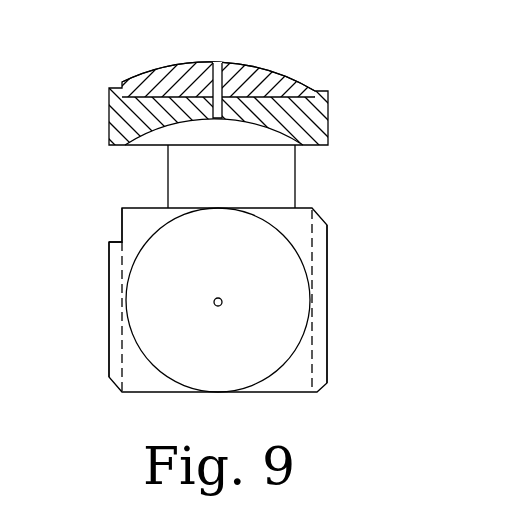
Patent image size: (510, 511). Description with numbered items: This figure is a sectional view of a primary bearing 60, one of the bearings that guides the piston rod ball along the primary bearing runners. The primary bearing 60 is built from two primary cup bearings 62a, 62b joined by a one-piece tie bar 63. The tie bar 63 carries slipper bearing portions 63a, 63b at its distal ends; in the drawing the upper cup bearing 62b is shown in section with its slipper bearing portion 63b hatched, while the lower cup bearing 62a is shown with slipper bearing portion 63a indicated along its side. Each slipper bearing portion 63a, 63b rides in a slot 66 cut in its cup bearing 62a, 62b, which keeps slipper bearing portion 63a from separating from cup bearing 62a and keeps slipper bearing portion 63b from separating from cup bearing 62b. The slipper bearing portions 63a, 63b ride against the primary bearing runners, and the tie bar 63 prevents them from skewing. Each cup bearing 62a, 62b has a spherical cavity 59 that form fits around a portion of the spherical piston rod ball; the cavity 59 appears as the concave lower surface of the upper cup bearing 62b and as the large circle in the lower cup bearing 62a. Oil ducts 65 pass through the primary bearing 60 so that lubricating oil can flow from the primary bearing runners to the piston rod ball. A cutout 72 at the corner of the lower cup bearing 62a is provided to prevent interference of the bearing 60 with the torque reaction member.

The spherical cavity 59 is at (150, 147).
The primary bearing 60 is at (334, 311).
The primary cup bearing 62a is at (177, 392).
The primary cup bearing 62b is at (328, 107).
The one-piece tie bar 63 is at (297, 178).
The slipper bearing portion 63a is at (315, 258).
The slipper bearing portion 63b is at (257, 67).
The oil duct 65 is at (218, 62).
The slot 66 is at (283, 97).
The cutout 72 is at (122, 242).